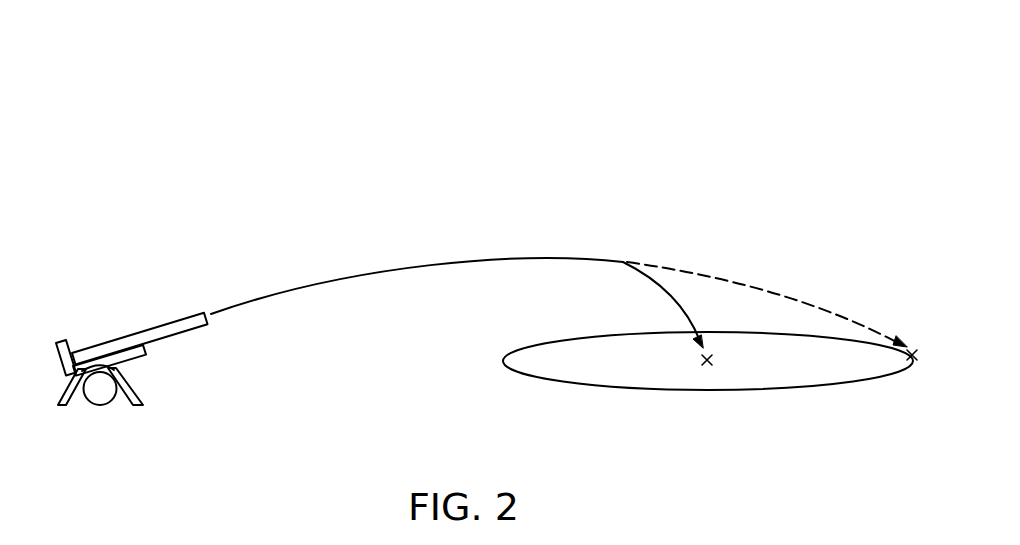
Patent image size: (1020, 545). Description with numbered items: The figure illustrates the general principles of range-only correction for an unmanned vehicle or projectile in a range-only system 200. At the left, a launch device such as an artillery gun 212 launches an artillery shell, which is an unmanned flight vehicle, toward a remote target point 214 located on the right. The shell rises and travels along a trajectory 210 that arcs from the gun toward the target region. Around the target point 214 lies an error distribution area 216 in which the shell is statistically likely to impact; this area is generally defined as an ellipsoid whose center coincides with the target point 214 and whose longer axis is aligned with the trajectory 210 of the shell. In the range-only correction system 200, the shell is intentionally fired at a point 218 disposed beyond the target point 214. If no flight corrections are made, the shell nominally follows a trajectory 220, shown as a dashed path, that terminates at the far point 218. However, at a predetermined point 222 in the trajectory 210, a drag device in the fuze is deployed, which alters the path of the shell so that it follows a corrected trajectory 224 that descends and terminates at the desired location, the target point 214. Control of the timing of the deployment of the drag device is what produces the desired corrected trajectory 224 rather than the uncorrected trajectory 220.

The range-only system 200 is at (560, 178).
The trajectory 210 is at (440, 262).
The artillery gun 212 is at (157, 327).
The target point 214 is at (708, 367).
The error distribution area 216 is at (617, 390).
The point beyond the target point 218 is at (914, 366).
The uncorrected trajectory 220 is at (798, 300).
The predetermined point 222 is at (635, 262).
The corrected trajectory 224 is at (658, 292).